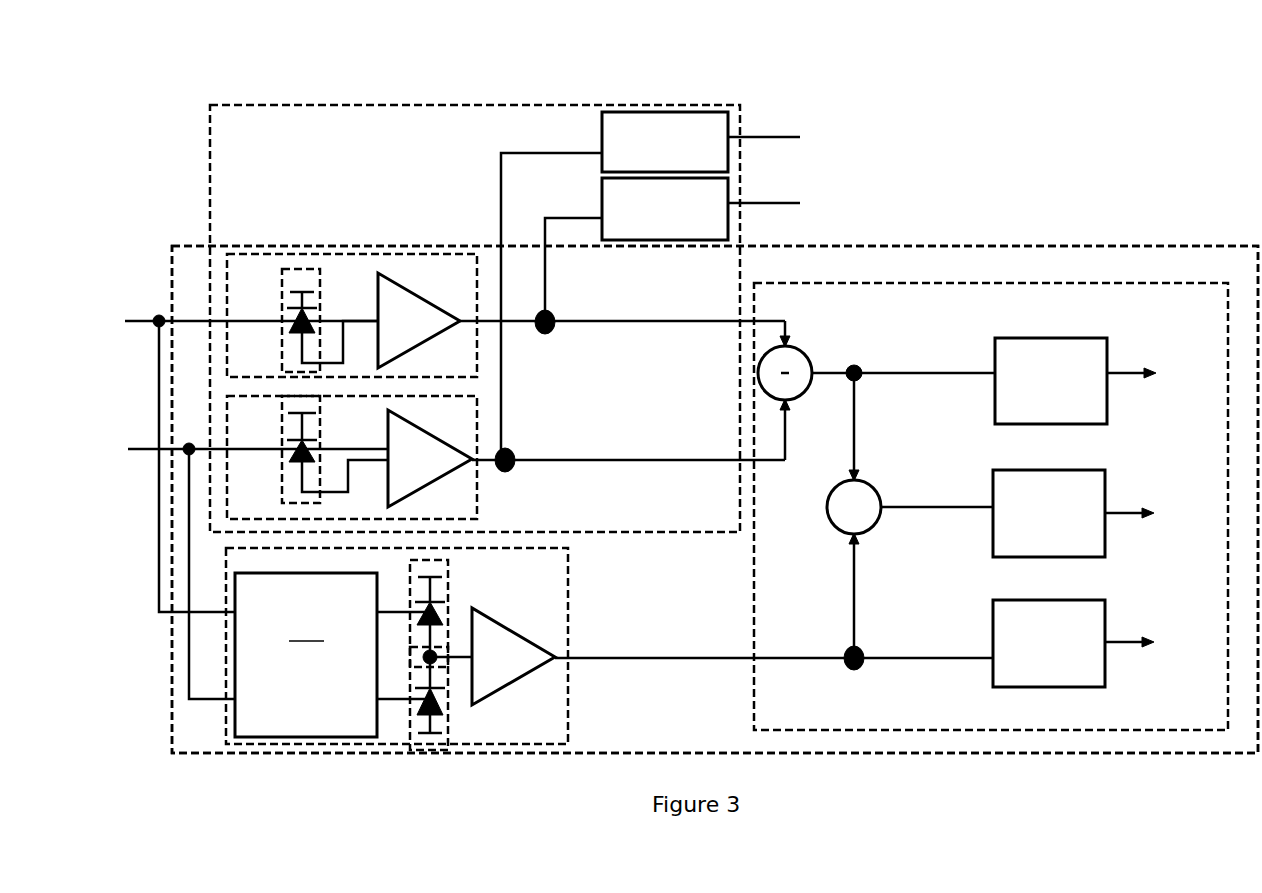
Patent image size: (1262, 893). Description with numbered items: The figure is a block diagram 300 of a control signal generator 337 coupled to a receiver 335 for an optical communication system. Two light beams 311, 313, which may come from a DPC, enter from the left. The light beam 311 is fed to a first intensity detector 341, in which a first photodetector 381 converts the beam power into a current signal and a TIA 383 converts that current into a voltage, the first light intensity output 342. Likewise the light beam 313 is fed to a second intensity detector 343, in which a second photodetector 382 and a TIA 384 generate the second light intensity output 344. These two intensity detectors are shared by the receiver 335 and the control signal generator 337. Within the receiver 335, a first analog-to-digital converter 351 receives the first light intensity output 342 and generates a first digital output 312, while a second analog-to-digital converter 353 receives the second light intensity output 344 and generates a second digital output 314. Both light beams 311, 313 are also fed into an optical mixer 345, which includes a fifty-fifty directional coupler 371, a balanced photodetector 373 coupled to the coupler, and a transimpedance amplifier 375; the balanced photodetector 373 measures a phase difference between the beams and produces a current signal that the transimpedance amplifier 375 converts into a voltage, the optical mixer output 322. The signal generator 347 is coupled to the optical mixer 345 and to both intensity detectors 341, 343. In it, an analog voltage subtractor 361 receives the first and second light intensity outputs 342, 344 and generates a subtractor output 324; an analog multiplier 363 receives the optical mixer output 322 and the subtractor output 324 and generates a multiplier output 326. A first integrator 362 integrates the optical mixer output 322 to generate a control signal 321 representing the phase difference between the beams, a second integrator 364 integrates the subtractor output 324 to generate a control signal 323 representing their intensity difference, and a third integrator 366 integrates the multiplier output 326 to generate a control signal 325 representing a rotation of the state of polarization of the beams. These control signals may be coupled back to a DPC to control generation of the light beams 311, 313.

The block diagram 300 is at (181, 126).
The receiver 335 is at (270, 151).
The control signal generator 337 is at (967, 274).
The signal generator 347 is at (1203, 726).
The first intensity detector 341 is at (272, 286).
The second intensity detector 343 is at (270, 426).
The optical mixer 345 is at (552, 583).
The light beam 311 is at (234, 460).
The light beam 313 is at (238, 568).
The first digital output 312 is at (764, 121).
The second digital output 314 is at (764, 188).
The control signal 321 is at (1155, 638).
The optical mixer output 322 is at (774, 601).
The control signal 323 is at (1149, 361).
The subtractor output 324 is at (903, 408).
The control signal 325 is at (1139, 498).
The multiplier output 326 is at (937, 490).
The first light intensity output 342 is at (625, 282).
The second light intensity output 344 is at (631, 312).
The first analog-to-digital converter 351 is at (665, 142).
The second analog-to-digital converter 353 is at (665, 209).
The analog voltage subtractor 361 is at (803, 350).
The first integrator 362 is at (1049, 643).
The analog multiplier 363 is at (829, 515).
The second integrator 364 is at (1051, 381).
The third integrator 366 is at (1049, 513).
The 50/50 directional coupler 371 is at (332, 655).
The balanced photodetector 373 is at (430, 735).
The transimpedance amplifier 375 is at (497, 700).
The first photodetector 381 is at (318, 270).
The second photodetector 382 is at (282, 485).
The TIA 383 is at (383, 275).
The TIA 384 is at (445, 476).